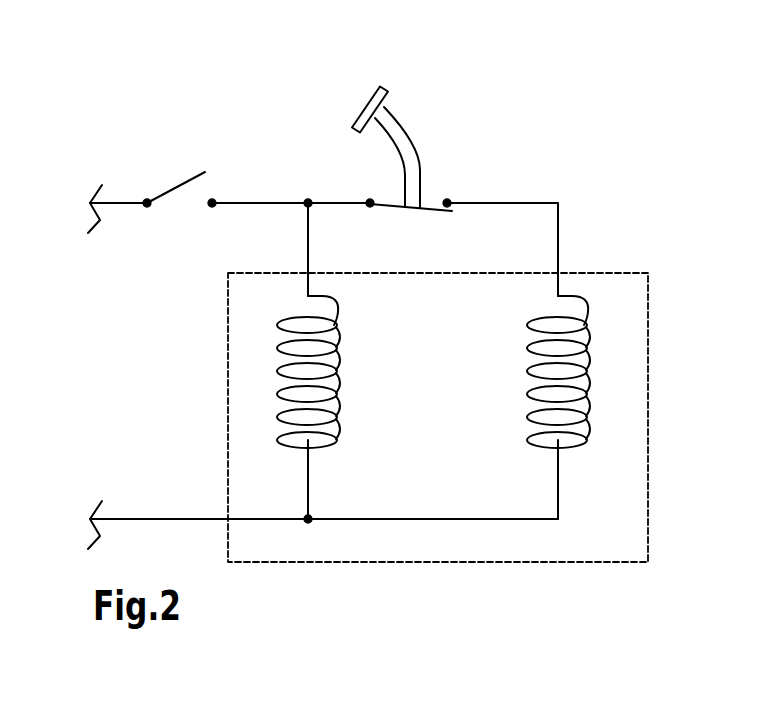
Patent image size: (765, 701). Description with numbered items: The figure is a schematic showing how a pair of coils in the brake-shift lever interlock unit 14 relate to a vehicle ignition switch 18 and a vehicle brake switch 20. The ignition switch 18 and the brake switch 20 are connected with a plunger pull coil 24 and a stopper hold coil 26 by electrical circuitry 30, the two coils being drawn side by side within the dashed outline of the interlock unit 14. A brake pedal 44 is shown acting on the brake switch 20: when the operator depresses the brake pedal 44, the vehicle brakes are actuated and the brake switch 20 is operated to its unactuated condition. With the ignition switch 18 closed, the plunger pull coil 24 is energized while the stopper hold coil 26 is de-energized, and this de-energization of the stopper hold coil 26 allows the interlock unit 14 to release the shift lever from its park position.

The brake-shift lever interlock unit 14 is at (377, 590).
The vehicle ignition switch 18 is at (180, 183).
The vehicle brake switch 20 is at (428, 197).
The plunger pull coil 24 is at (285, 392).
The stopper hold coil 26 is at (545, 388).
The electrical circuitry 30 is at (160, 519).
The brake pedal 44 is at (374, 98).